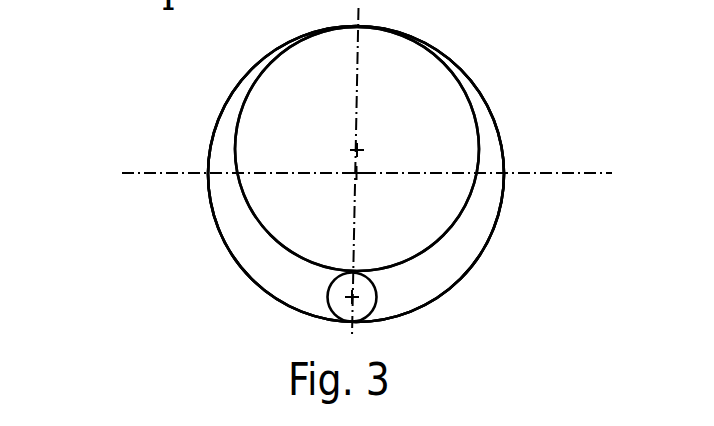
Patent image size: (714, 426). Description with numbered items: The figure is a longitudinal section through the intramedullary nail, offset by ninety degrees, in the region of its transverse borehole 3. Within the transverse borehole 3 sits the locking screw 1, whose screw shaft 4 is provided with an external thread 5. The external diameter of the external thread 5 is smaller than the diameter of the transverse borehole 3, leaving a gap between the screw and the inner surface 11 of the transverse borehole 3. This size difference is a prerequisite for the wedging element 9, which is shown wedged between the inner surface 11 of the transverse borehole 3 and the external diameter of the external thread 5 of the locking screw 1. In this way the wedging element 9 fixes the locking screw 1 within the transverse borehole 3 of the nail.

The locking screw 1 is at (228, 207).
The transverse borehole 3 is at (267, 261).
The screw shaft 4 is at (290, 111).
The external thread 5 is at (480, 127).
The wedging element 9 is at (382, 305).
The inner surface 11 is at (478, 258).